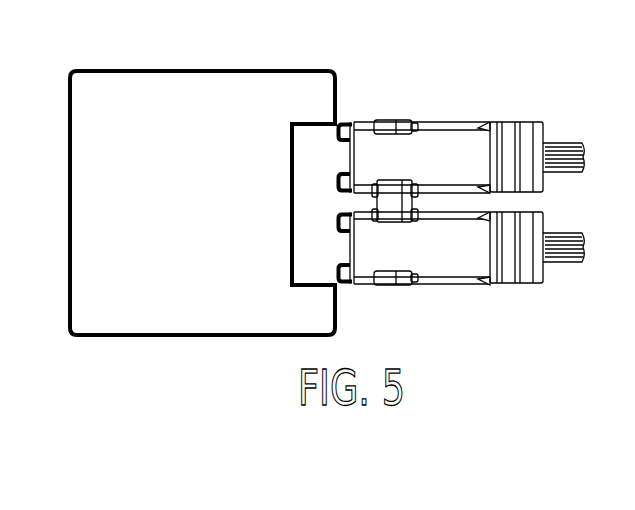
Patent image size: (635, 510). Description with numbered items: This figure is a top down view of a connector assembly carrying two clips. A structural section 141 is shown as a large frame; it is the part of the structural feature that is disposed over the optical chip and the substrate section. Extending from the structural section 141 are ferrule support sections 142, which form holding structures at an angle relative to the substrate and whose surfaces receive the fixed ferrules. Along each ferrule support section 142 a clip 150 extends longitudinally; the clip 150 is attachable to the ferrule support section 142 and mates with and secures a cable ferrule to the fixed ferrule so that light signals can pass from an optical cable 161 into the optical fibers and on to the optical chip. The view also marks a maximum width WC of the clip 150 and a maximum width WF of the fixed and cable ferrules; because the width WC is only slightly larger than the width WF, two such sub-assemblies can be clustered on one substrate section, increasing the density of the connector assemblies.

The structural section 141 is at (206, 205).
The ferrule support section 142 is at (393, 118).
The clip 150 is at (523, 214).
The optical cable 161 is at (568, 239).
The maximum width of the fixed ferrule and the cable ferrule WF is at (347, 248).
The maximum width of the clip WC is at (447, 245).